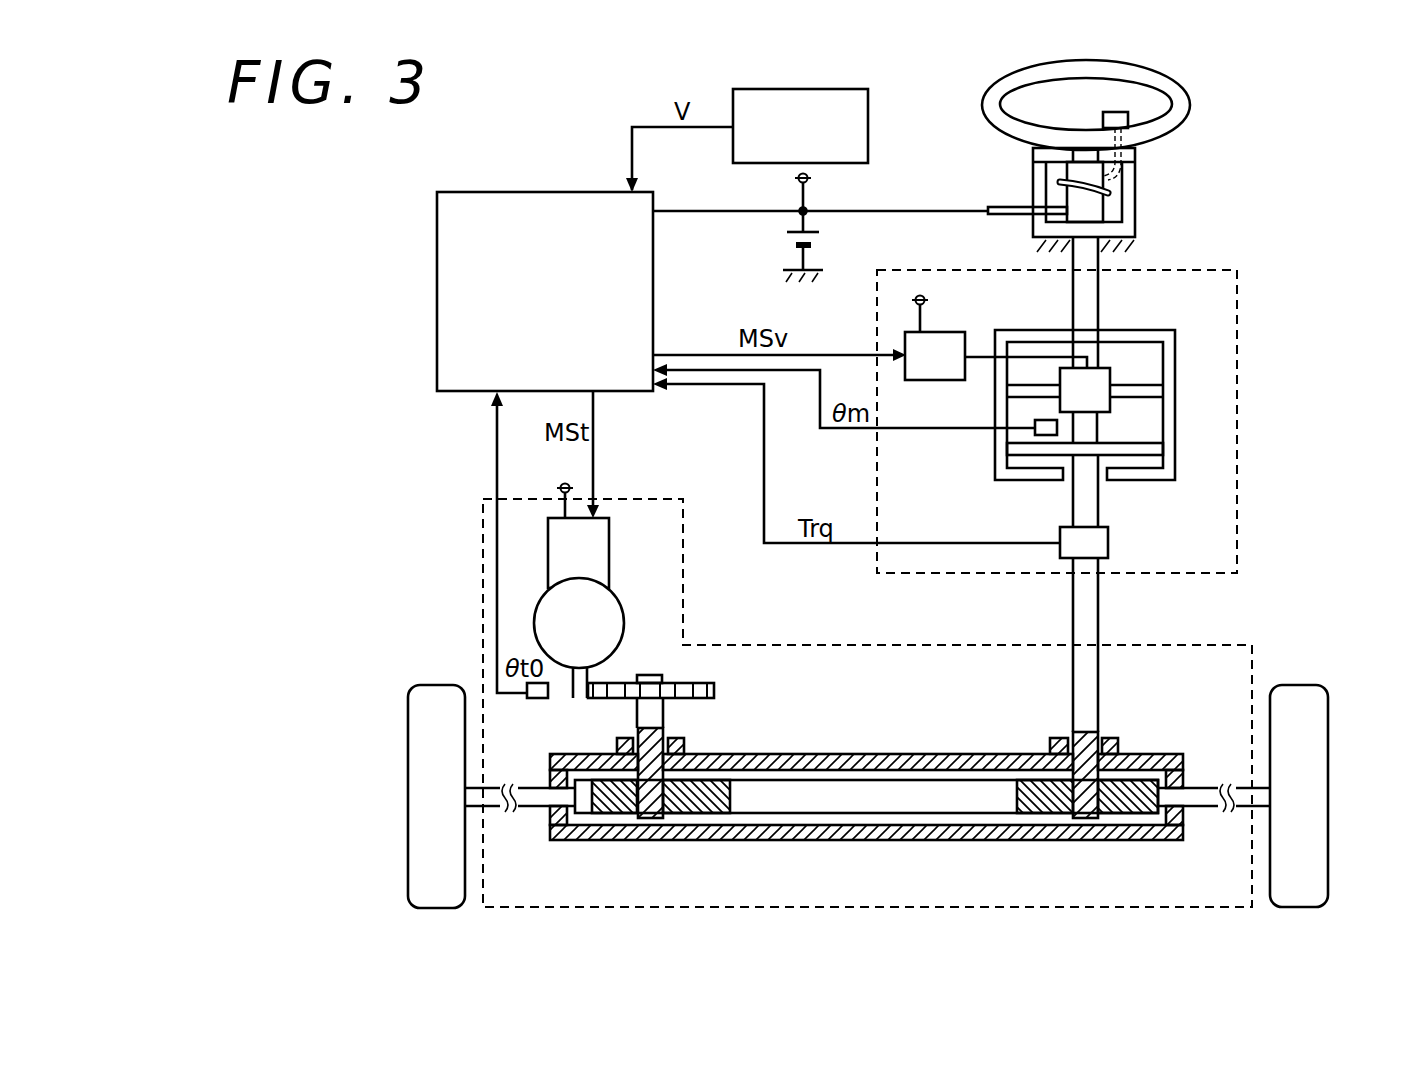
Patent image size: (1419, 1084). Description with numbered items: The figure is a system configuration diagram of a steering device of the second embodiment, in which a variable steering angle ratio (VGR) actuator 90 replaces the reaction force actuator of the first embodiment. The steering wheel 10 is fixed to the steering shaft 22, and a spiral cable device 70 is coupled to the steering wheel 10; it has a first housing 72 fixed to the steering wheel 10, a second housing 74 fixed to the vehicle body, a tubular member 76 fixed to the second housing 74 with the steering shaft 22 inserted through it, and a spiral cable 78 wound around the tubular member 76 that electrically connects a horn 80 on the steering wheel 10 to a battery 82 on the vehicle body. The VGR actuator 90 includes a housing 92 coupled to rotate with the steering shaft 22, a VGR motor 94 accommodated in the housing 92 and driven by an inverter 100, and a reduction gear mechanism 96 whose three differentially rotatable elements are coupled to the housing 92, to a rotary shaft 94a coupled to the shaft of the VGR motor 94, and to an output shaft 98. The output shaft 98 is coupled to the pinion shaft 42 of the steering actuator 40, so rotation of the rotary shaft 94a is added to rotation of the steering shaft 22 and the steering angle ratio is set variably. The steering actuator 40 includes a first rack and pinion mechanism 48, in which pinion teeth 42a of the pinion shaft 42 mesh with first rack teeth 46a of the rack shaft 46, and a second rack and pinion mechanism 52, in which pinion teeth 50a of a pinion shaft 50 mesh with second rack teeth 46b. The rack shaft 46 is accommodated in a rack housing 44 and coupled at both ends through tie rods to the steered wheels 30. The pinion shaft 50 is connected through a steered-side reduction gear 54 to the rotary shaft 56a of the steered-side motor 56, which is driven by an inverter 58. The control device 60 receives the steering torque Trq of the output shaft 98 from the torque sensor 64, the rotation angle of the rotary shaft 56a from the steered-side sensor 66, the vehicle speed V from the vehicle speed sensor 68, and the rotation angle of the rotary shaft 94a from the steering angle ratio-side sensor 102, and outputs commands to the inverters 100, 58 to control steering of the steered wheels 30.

The steering wheel 10 is at (1190, 100).
The steering shaft 22 is at (1100, 312).
The steered wheels 30 is at (440, 686).
The steering actuator 40 is at (1256, 632).
The pinion shaft 42 is at (1100, 688).
The pinion teeth 42a is at (1092, 742).
The rack housing 44 is at (1160, 756).
The rack shaft 46 is at (955, 825).
The first rack teeth 46a is at (1139, 808).
The second rack teeth 46b is at (726, 808).
The first rack and pinion mechanism 48 is at (1078, 857).
The pinion shaft 50 is at (636, 712).
The pinion teeth 50a is at (664, 738).
The second rack and pinion mechanism 52 is at (656, 855).
The steered-side reduction gear 54 is at (690, 681).
The steered-side motor 56 is at (624, 620).
The rotary shaft 56a is at (580, 700).
The inverter 58 is at (610, 553).
The control device 60 is at (655, 290).
The torque sensor 64 is at (1110, 543).
The steered-side sensor 66 is at (537, 700).
The vehicle speed sensor 68 is at (869, 125).
The spiral cable device 70 is at (1222, 184).
The first housing 72 is at (1136, 154).
The second housing 74 is at (1135, 210).
The tubular member 76 is at (1138, 236).
The spiral cable 78 is at (1122, 186).
The horn 80 is at (1104, 110).
The battery 82 is at (820, 232).
The variable steering angle ratio actuator 90 is at (1238, 270).
The housing 92 is at (1177, 368).
The VGR motor 94 is at (1112, 374).
The rotary shaft 94a is at (1098, 430).
The reduction gear mechanism 96 is at (1150, 445).
The output shaft 98 is at (1100, 500).
The inverter 100 is at (954, 332).
The steering angle ratio-side sensor 102 is at (1042, 419).